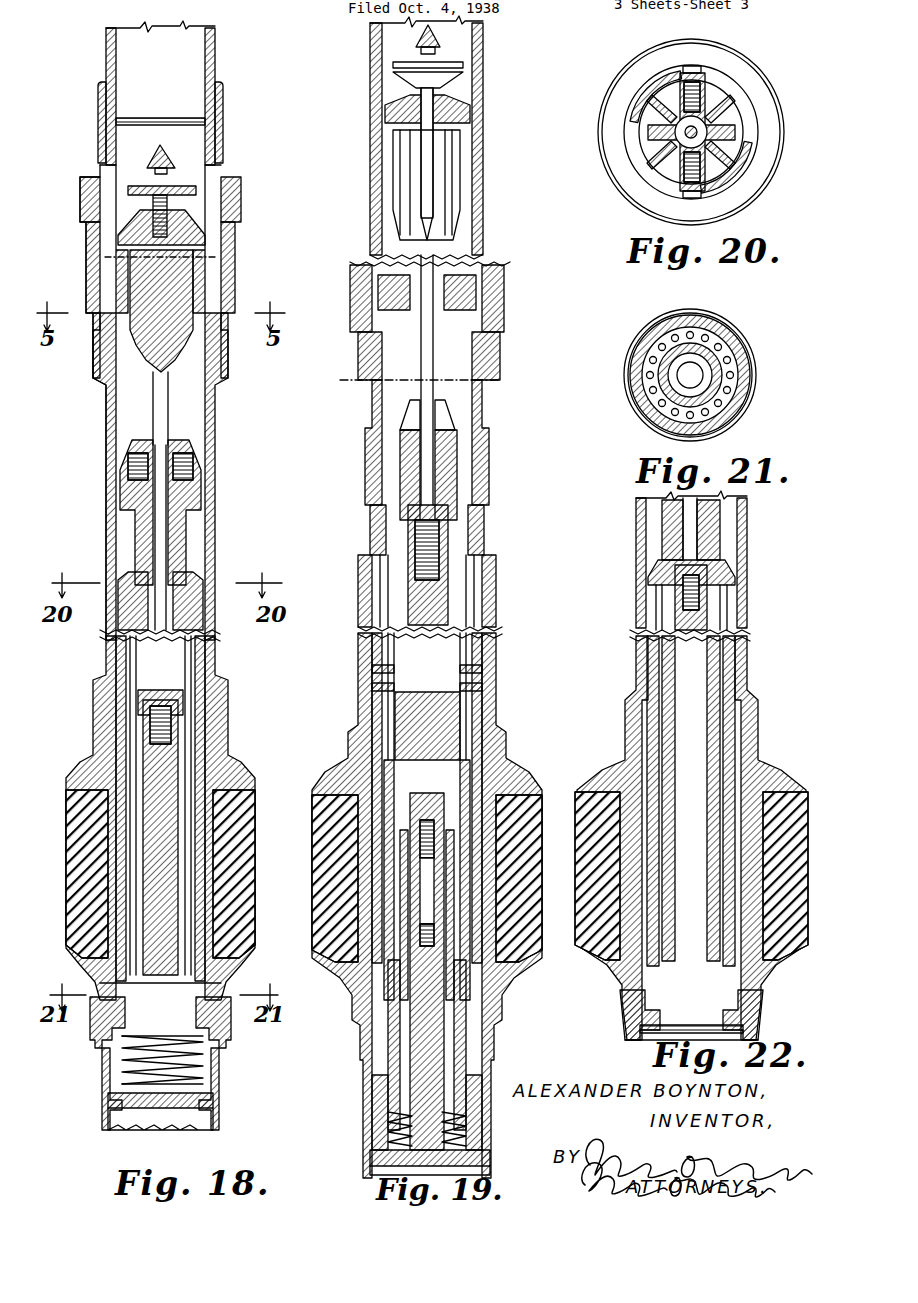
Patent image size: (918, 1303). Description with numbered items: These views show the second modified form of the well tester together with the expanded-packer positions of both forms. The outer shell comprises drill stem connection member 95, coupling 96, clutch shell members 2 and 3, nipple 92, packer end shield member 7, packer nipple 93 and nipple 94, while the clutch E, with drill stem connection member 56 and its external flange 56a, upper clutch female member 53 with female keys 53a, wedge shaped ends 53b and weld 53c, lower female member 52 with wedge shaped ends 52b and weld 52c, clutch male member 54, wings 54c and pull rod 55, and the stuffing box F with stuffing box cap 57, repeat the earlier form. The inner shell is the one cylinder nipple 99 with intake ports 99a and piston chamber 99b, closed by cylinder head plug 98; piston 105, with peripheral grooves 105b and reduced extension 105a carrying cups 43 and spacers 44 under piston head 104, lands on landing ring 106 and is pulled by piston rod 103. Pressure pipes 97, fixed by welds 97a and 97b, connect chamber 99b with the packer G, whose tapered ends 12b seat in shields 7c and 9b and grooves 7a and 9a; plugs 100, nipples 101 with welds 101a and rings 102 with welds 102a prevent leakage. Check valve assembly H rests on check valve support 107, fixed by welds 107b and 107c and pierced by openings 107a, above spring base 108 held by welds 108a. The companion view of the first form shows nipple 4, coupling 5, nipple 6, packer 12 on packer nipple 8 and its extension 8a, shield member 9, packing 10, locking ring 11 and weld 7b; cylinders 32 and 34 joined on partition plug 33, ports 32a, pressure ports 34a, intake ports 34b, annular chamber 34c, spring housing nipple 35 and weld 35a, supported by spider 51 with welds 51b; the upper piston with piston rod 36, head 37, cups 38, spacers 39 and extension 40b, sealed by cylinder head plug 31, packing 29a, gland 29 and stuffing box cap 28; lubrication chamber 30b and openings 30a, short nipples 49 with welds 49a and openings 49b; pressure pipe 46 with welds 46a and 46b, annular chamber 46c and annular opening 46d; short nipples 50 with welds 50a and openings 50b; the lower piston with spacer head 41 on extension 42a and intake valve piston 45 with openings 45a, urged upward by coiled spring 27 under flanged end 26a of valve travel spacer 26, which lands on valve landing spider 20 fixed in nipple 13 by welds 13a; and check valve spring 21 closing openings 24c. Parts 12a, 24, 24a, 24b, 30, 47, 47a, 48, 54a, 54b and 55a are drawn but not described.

In FIG. 18, the upper clutch shell housing nipple 2 is at (95, 258).
In FIG. 19, the upper clutch shell housing nipple 2 is at (505, 277).
In FIG. 22, the upper clutch shell housing nipple 2 is at (746, 1040).
In FIG. 18, the lower clutch shell housing nipple 3 is at (100, 370).
In FIG. 19, the lower clutch shell housing nipple 3 is at (496, 353).
In FIG. 19, the nipple 4 is at (486, 395).
In FIG. 19, the coupling 5 is at (490, 443).
In FIG. 19, the nipple 6 is at (490, 572).
In FIG. 18, the packer end shield member 7 is at (222, 696).
In FIG. 19, the packer end shield member 7 is at (494, 747).
In FIG. 22, the packer end shield member 7 is at (752, 730).
In FIG. 18, the grooves 7a is at (86, 790).
In FIG. 19, the grooves 7a is at (508, 808).
In FIG. 22, the grooves 7a is at (766, 790).
In FIG. 19, the weld 7b is at (502, 764).
In FIG. 18, the cup or shield 7c is at (85, 772).
In FIG. 19, the cup or shield 7c is at (505, 828).
In FIG. 19, the packer nipple 8 is at (530, 850).
In FIG. 19, the lower extension of nipple 8 8a is at (486, 1138).
In FIG. 18, the packer end shield member 9 is at (228, 962).
In FIG. 19, the packer end shield member 9 is at (505, 1003).
In FIG. 22, the packer end shield member 9 is at (766, 975).
In FIG. 18, the grooves 9a is at (236, 945).
In FIG. 18, the cup or shield 9b is at (240, 925).
In FIG. 19, the packing 10 is at (500, 1022).
In FIG. 18, the locking ring 11 is at (228, 1005).
In FIG. 19, the locking ring 11 is at (500, 1038).
In FIG. 21, the locking ring 11 is at (732, 420).
In FIG. 22, the locking ring 11 is at (762, 1015).
In FIG. 19, the packer 12 is at (330, 895).
In FIG. 19, the packing ring 12a is at (345, 843).
In FIG. 19, the tapered ends of the packer 12b is at (428, 800).
In FIG. 19, the nipple 13 is at (372, 1160).
In FIG. 19, the welds 13a is at (378, 1165).
In FIG. 19, the valve landing spider 20 is at (375, 1176).
In FIG. 19, the coiled spring 21 is at (385, 1142).
In FIG. 19, the sleeve 24 is at (370, 1103).
In FIG. 19, the sleeve flange 24a is at (378, 1110).
In FIG. 19, the sleeve shoulder 24b is at (370, 1075).
In FIG. 19, the openings 24c is at (490, 1070).
In FIG. 19, the valve travel spacer 26 is at (408, 1058).
In FIG. 19, the externally flanged upper end 26a is at (410, 1035).
In FIG. 19, the coiled spring 27 is at (452, 1054).
In FIG. 19, the stuffing box cap 28 is at (405, 408).
In FIG. 19, the gland 29 is at (460, 419).
In FIG. 19, the packing 29a is at (397, 452).
In FIG. 19, the mandrel 30 is at (492, 670).
In FIG. 19, the openings 30a is at (492, 602).
In FIG. 19, the annular lubrication chamber 30b is at (492, 618).
In FIG. 19, the cylinder head plug 31 is at (490, 457).
In FIG. 19, the nipple 32 is at (400, 650).
In FIG. 19, the openings 32a is at (490, 560).
In FIG. 19, the partition plug 33 is at (492, 710).
In FIG. 19, the nipple 34 is at (388, 778).
In FIG. 19, the pressure ports 34a is at (390, 760).
In FIG. 19, the intake ports 34b is at (500, 965).
In FIG. 19, the annular chamber 34c is at (462, 942).
In FIG. 19, the spring housing nipple 35 is at (405, 1045).
In FIG. 19, the weld 35a is at (355, 965).
In FIG. 19, the piston rod 36 is at (430, 365).
In FIG. 19, the piston head 37 is at (405, 570).
In FIG. 19, the cups 38 is at (410, 595).
In FIG. 19, the spacers 39 is at (490, 587).
In FIG. 19, the cup carrier extension 40b is at (412, 625).
In FIG. 19, the piston spacer head 41 is at (345, 828).
In FIG. 19, the reduced diameter extension 42a is at (430, 875).
In FIG. 18, the cups 43 is at (226, 815).
In FIG. 18, the cup spacers 44 is at (110, 808).
In FIG. 19, the cup spacers 44 is at (460, 887).
In FIG. 19, the intake valve piston 45 is at (450, 983).
In FIG. 19, the openings 45a is at (375, 978).
In FIG. 19, the pressure pipe 46 is at (494, 655).
In FIG. 19, the weld 46a is at (505, 895).
In FIG. 19, the weld 46b is at (490, 507).
In FIG. 19, the annular chamber 46c is at (462, 788).
In FIG. 19, the annular opening 46d is at (492, 639).
In FIG. 19, the ring 47 is at (378, 524).
In FIG. 19, the ring flange 47a is at (372, 553).
In FIG. 19, the packing ring 48 is at (375, 532).
In FIG. 19, the short nipples 49 is at (375, 693).
In FIG. 19, the welds 49a is at (375, 663).
In FIG. 19, the openings 49b is at (380, 676).
In FIG. 19, the short nipples 50 is at (462, 870).
In FIG. 19, the welds 50a is at (500, 905).
In FIG. 19, the openings 50b is at (340, 912).
In FIG. 19, the support spider 51 is at (385, 497).
In FIG. 19, the welds 51b is at (392, 470).
In FIG. 19, the lower female member 52 is at (500, 322).
In FIG. 19, the wedge shaped upper ends 52b is at (365, 340).
In FIG. 19, the weld 52c is at (500, 340).
In FIG. 19, the upper clutch female member 53 is at (486, 292).
In FIG. 19, the female keys 53a is at (378, 292).
In FIG. 19, the upper wedge shaped ends 53b is at (372, 270).
In FIG. 19, the weld 53c is at (500, 303).
In FIG. 18, the clutch male member 54 is at (148, 296).
In FIG. 19, the clutch male member 54 is at (425, 240).
In FIG. 19, the valve finger 54a is at (410, 184).
In FIG. 19, the valve finger 54b is at (455, 184).
In FIG. 19, the wings 54c is at (400, 112).
In FIG. 18, the pull rod 55 is at (150, 168).
In FIG. 19, the pull rod 55 is at (410, 46).
In FIG. 18, the valve disc 55a is at (185, 194).
In FIG. 19, the valve disc 55a is at (458, 66).
In FIG. 19, the drill stem connection member 56 is at (476, 142).
In FIG. 19, the external flange 56a is at (485, 280).
In FIG. 18, the stuffing box cap 57 is at (86, 200).
In FIG. 18, the nipple 92 is at (208, 427).
In FIG. 20, the nipple 92 is at (655, 180).
In FIG. 22, the nipple 92 is at (640, 566).
In FIG. 18, the packer nipple 93 is at (100, 928).
In FIG. 22, the packer nipple 93 is at (605, 805).
In FIG. 18, the nipple 94 is at (105, 1138).
In FIG. 18, the drill stem connection member 95 is at (112, 45).
In FIG. 18, the coupling 96 is at (116, 122).
In FIG. 18, the pressure pipes 97 is at (130, 654).
In FIG. 20, the pressure pipes 97 is at (680, 136).
In FIG. 22, the pressure pipes 97 is at (740, 583).
In FIG. 18, the welds 97a is at (138, 572).
In FIG. 20, the welds 97a is at (658, 113).
In FIG. 22, the welds 97a is at (712, 564).
In FIG. 18, the welds 97b is at (100, 872).
In FIG. 22, the welds 97b is at (752, 812).
In FIG. 18, the cylinder head plug 98 is at (140, 548).
In FIG. 22, the cylinder head plug 98 is at (668, 537).
In FIG. 18, the cylinder nipple 99 is at (130, 625).
In FIG. 20, the cylinder nipple 99 is at (712, 148).
In FIG. 22, the cylinder nipple 99 is at (720, 653).
In FIG. 18, the intake ports 99a is at (100, 900).
In FIG. 22, the intake ports 99a is at (762, 932).
In FIG. 18, the piston chamber 99b is at (182, 614).
In FIG. 18, the plugs 100 is at (118, 594).
In FIG. 20, the plugs 100 is at (682, 92).
In FIG. 20, the nipples 101 is at (712, 97).
In FIG. 20, the welds 101a is at (674, 110).
In FIG. 20, the rings 102 is at (708, 85).
In FIG. 20, the welds 102a is at (668, 85).
In FIG. 18, the piston rod 103 is at (158, 418).
In FIG. 20, the piston rod 103 is at (684, 138).
In FIG. 22, the piston rod 103 is at (690, 511).
In FIG. 18, the piston head 104 is at (138, 725).
In FIG. 22, the piston head 104 is at (720, 600).
In FIG. 18, the piston 105 is at (125, 948).
In FIG. 18, the upper extension of reduced diameter 105a is at (115, 858).
In FIG. 22, the upper extension of reduced diameter 105a is at (682, 617).
In FIG. 18, the peripheral grooves 105b is at (135, 967).
In FIG. 18, the landing ring 106 is at (110, 997).
In FIG. 21, the landing ring 106 is at (696, 392).
In FIG. 22, the landing ring 106 is at (680, 1035).
In FIG. 18, the check valve support 107 is at (226, 1046).
In FIG. 21, the check valve support 107 is at (712, 343).
In FIG. 22, the check valve support 107 is at (763, 998).
In FIG. 18, the openings 107a is at (100, 1030).
In FIG. 21, the openings 107a is at (734, 377).
In FIG. 22, the openings 107a is at (632, 997).
In FIG. 18, the weld 107b is at (228, 1022).
In FIG. 22, the weld 107b is at (633, 1025).
In FIG. 18, the weld 107c is at (236, 978).
In FIG. 22, the weld 107c is at (656, 985).
In FIG. 18, the spring base 108 is at (108, 1118).
In FIG. 18, the welds 108a is at (228, 1102).
In FIG. 18, the clutch E is at (205, 257).
In FIG. 19, the clutch E is at (431, 380).
In FIG. 18, the stuffing box F is at (150, 512).
In FIG. 22, the stuffing box F is at (728, 534).
In FIG. 18, the packer G is at (85, 833).
In FIG. 19, the packer G is at (427, 878).
In FIG. 22, the packer G is at (596, 818).
In FIG. 18, the check valve assembly H is at (205, 1066).